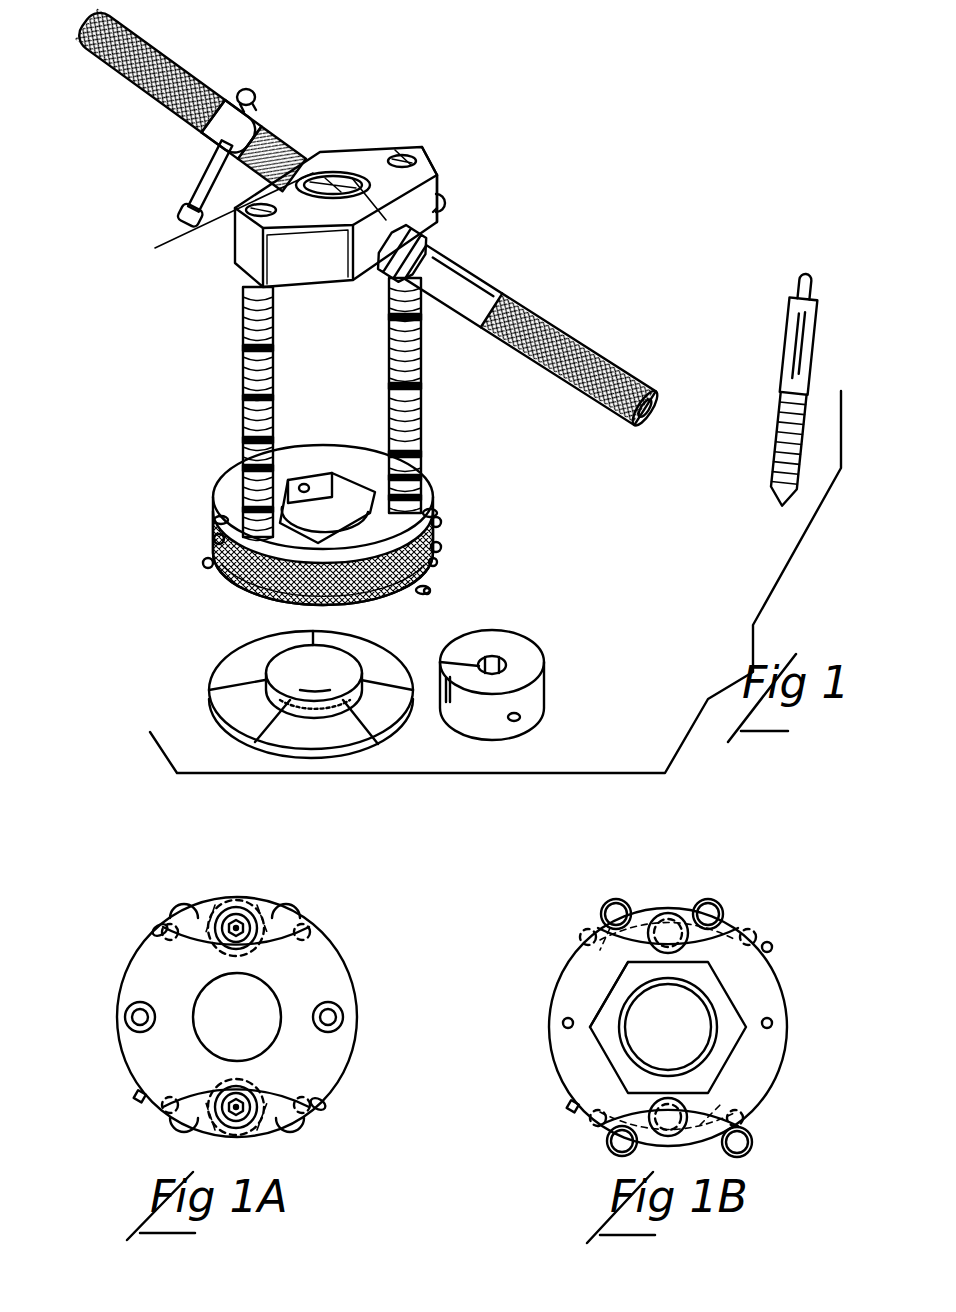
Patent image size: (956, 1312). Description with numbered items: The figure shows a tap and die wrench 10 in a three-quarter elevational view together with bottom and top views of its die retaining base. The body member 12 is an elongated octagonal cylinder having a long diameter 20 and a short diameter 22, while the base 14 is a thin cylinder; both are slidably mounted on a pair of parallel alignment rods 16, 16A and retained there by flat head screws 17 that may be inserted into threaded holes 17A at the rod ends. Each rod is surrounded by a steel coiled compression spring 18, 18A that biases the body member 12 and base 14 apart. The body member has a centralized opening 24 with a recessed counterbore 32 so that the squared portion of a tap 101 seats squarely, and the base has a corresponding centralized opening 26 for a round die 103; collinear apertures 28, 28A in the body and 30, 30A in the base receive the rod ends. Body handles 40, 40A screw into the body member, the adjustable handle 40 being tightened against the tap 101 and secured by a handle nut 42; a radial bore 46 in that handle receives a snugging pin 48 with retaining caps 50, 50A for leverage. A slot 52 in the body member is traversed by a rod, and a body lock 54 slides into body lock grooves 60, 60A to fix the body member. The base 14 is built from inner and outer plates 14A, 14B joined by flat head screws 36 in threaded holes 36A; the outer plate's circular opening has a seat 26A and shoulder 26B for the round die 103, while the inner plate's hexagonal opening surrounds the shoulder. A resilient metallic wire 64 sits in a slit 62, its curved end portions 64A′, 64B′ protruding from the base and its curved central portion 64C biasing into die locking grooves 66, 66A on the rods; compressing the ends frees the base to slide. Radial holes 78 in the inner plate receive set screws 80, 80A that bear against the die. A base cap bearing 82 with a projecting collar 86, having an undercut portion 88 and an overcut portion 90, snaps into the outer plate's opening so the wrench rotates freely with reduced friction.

In FIG. 1, the tap and die wrench 10 is at (568, 140).
In FIG. 1, the body member 12 is at (233, 250).
In FIG. 1, the base 14 is at (320, 580).
In FIG. 1, the inner cylindrical plate 14A is at (312, 460).
In FIG. 1B, the inner cylindrical plate 14A is at (684, 1032).
In FIG. 1, the outer cylindrical plate 14B is at (277, 602).
In FIG. 1A, the outer cylindrical plate 14B is at (234, 992).
In FIG. 1, the parallel alignment rod 16 is at (278, 307).
In FIG. 1B, the parallel alignment rod 16 is at (668, 910).
In FIG. 1, the parallel alignment rod 16A is at (389, 302).
In FIG. 1B, the parallel alignment rod 16A is at (650, 1150).
In FIG. 1, the flat head screw 17 is at (440, 183).
In FIG. 1A, the flat head screw 17 is at (232, 917).
In FIG. 1A, the threaded hole 17A is at (297, 923).
In FIG. 1, the metallic spring 18 is at (275, 326).
In FIG. 1, the metallic spring 18A is at (391, 330).
In FIG. 1, the long diameter 20 is at (446, 154).
In FIG. 1, the short diameter 22 is at (336, 172).
In FIG. 1, the centralized opening 24 is at (346, 173).
In FIG. 1, the centralized opening 26 is at (372, 505).
In FIG. 1A, the centralized opening 26 is at (263, 993).
In FIG. 1B, the centralized opening 26 is at (677, 1017).
In FIG. 1B, the seat 26A is at (622, 997).
In FIG. 1B, the shoulder portion 26B is at (598, 1023).
In FIG. 1, the aperture 28 is at (278, 212).
In FIG. 1, the aperture 28A is at (412, 158).
In FIG. 1, the aperture 30 is at (216, 520).
In FIG. 1A, the aperture 30 is at (162, 928).
In FIG. 1, the aperture 30A is at (432, 513).
In FIG. 1A, the aperture 30A is at (327, 1105).
In FIG. 1, the recessed counterbore 32 is at (405, 150).
In FIG. 1A, the flat head screw 36 is at (130, 1000).
In FIG. 1B, the threaded hole 36A is at (560, 1023).
In FIG. 1, the body handle 40 is at (127, 77).
In FIG. 1, the body handle 40A is at (600, 362).
In FIG. 1, the handle nut 42 is at (430, 243).
In FIG. 1, the radial bore 46 is at (225, 98).
In FIG. 1, the snugging pin 48 is at (205, 172).
In FIG. 1, the retaining cap 50 is at (253, 93).
In FIG. 1, the retaining cap 50A is at (178, 214).
In FIG. 1, the slot 52 is at (446, 200).
In FIG. 1, the body lock 54 is at (448, 206).
In FIG. 1, the body lock groove 60 is at (243, 347).
In FIG. 1B, the body lock groove 60 is at (590, 927).
In FIG. 1, the body lock groove 60A is at (422, 320).
In FIG. 1B, the body lock groove 60A is at (705, 1107).
In FIG. 1, the slit 62 is at (308, 606).
In FIG. 1, the resilient metallic wire 64 is at (437, 528).
In FIG. 1A, the resilient metallic wire 64 is at (183, 893).
In FIG. 1B, the resilient metallic wire 64 is at (707, 899).
In FIG. 1A, the curved end portion 64A′ is at (165, 1143).
In FIG. 1B, the curved end portion 64A′ is at (607, 1152).
In FIG. 1A, the curved end portion 64B′ is at (303, 1142).
In FIG. 1B, the curved end portion 64B′ is at (743, 1140).
In FIG. 1A, the curved central portion 64C is at (265, 893).
In FIG. 1B, the curved central portion 64C is at (735, 917).
In FIG. 1, the die locking groove 66 is at (247, 448).
In FIG. 1B, the die locking groove 66 is at (631, 985).
In FIG. 1, the die locking groove 66A is at (245, 408).
In FIG. 1B, the die locking groove 66A is at (590, 895).
In FIG. 1, the radial hole 78 is at (437, 561).
In FIG. 1, the set screw 80 is at (433, 591).
In FIG. 1B, the set screw 80 is at (772, 947).
In FIG. 1A, the set screw 80A is at (135, 1099).
In FIG. 1B, the set screw 80A is at (566, 1107).
In FIG. 1, the base cap bearing 82 is at (279, 699).
In FIG. 1, the projecting collar 86 is at (343, 713).
In FIG. 1, the circular undercut portion 88 is at (283, 717).
In FIG. 1, the circular overcut portion 90 is at (266, 693).
In FIG. 1, the tap 101 is at (787, 442).
In FIG. 1, the round die 103 is at (546, 690).